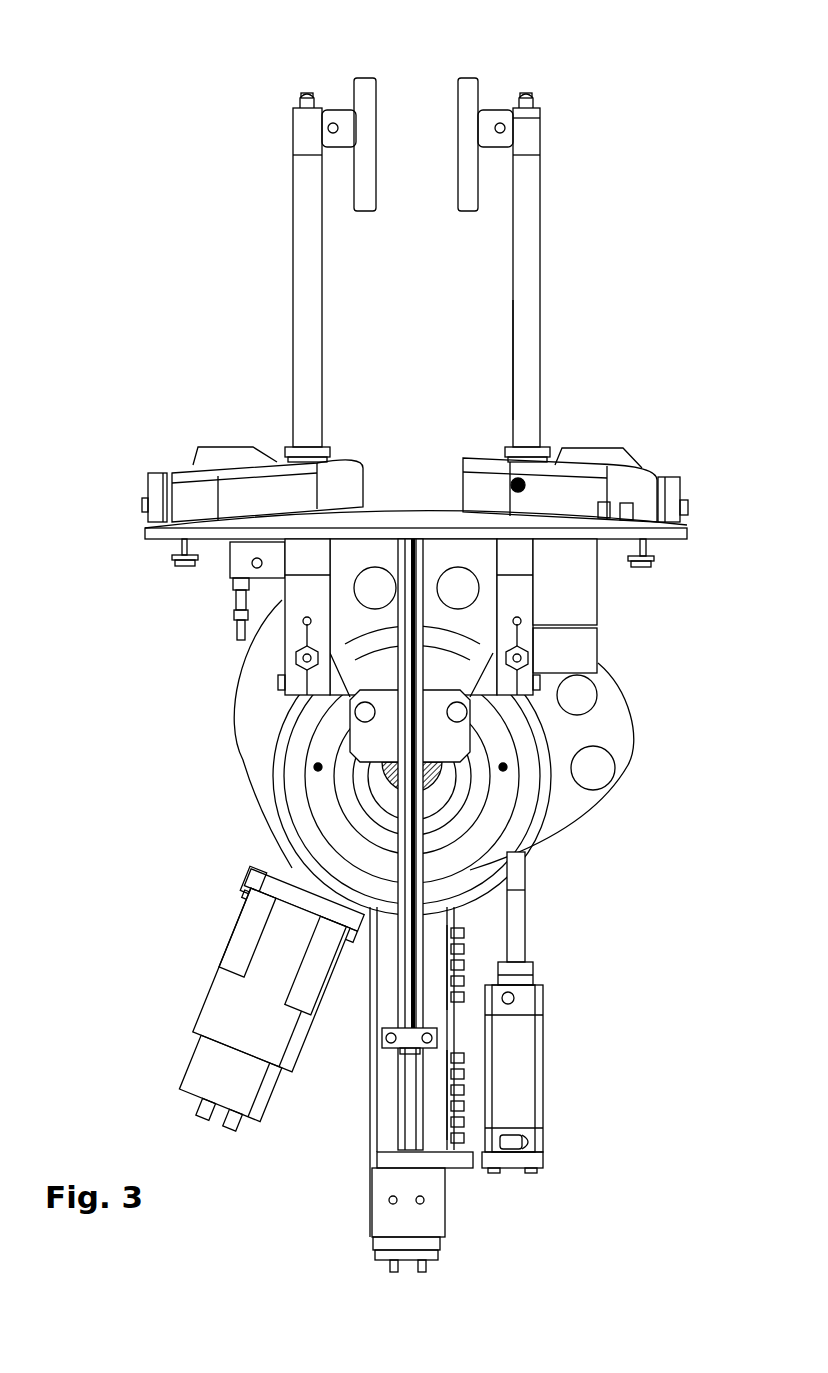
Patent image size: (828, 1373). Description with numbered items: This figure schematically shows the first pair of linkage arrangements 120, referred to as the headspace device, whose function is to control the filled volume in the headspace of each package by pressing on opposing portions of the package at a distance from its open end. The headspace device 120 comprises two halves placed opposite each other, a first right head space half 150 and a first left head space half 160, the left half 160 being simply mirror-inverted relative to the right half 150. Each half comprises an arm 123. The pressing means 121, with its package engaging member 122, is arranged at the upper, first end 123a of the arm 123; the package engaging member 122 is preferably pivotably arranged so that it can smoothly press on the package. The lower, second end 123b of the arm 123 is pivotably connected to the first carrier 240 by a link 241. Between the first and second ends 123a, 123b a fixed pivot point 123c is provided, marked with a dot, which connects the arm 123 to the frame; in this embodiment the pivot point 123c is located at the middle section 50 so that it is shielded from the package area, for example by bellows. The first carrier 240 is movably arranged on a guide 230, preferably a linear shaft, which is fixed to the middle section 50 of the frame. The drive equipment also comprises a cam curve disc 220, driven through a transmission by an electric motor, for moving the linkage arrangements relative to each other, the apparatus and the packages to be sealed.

The middle section 50 is at (553, 528).
The first pair of linkage arrangements 120 is at (196, 147).
The pressing means 121 is at (507, 66).
The package engaging member 122 is at (373, 120).
The arm 123 is at (533, 360).
The first end 123a is at (552, 112).
The second end 123b is at (535, 658).
The fixed pivot point 123c is at (535, 470).
The first right head space half 150 is at (580, 249).
The first left head space half 160 is at (265, 249).
The cam curve disc 220 is at (623, 700).
The guide 230 is at (470, 872).
The first carrier 240 is at (367, 742).
The link 241 is at (617, 778).